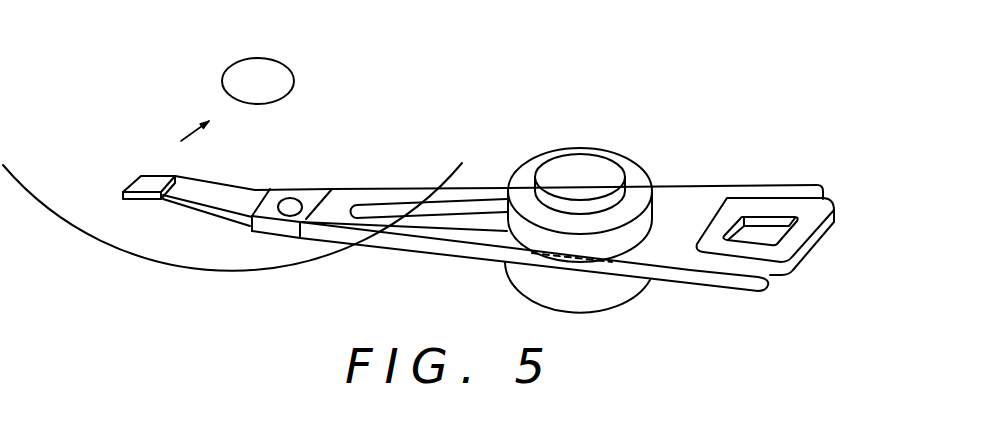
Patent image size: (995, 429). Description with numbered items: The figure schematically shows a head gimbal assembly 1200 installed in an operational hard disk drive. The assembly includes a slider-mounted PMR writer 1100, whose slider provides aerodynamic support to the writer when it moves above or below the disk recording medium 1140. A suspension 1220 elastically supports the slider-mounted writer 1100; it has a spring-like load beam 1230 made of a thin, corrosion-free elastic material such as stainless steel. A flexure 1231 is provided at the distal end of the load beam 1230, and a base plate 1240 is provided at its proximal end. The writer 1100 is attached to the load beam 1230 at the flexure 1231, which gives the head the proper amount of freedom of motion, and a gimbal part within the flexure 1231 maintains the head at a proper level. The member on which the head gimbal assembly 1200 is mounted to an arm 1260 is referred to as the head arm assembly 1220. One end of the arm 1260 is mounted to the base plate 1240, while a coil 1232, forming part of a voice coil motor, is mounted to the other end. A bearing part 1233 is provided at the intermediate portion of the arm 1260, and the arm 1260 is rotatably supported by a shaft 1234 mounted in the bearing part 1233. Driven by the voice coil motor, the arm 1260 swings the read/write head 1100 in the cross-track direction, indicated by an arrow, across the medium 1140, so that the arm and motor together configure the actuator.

The slider-mounted PMR writer 1100 is at (134, 173).
The disk recording medium 1140 is at (121, 251).
The head gimbal assembly 1200 is at (233, 244).
The suspension 1220 is at (438, 147).
The load beam 1230 is at (249, 196).
The flexure 1231 is at (123, 190).
The coil 1232 is at (805, 250).
The bearing part 1233 is at (532, 167).
The shaft 1234 is at (583, 168).
The base plate 1240 is at (320, 193).
The arm 1260 is at (393, 243).